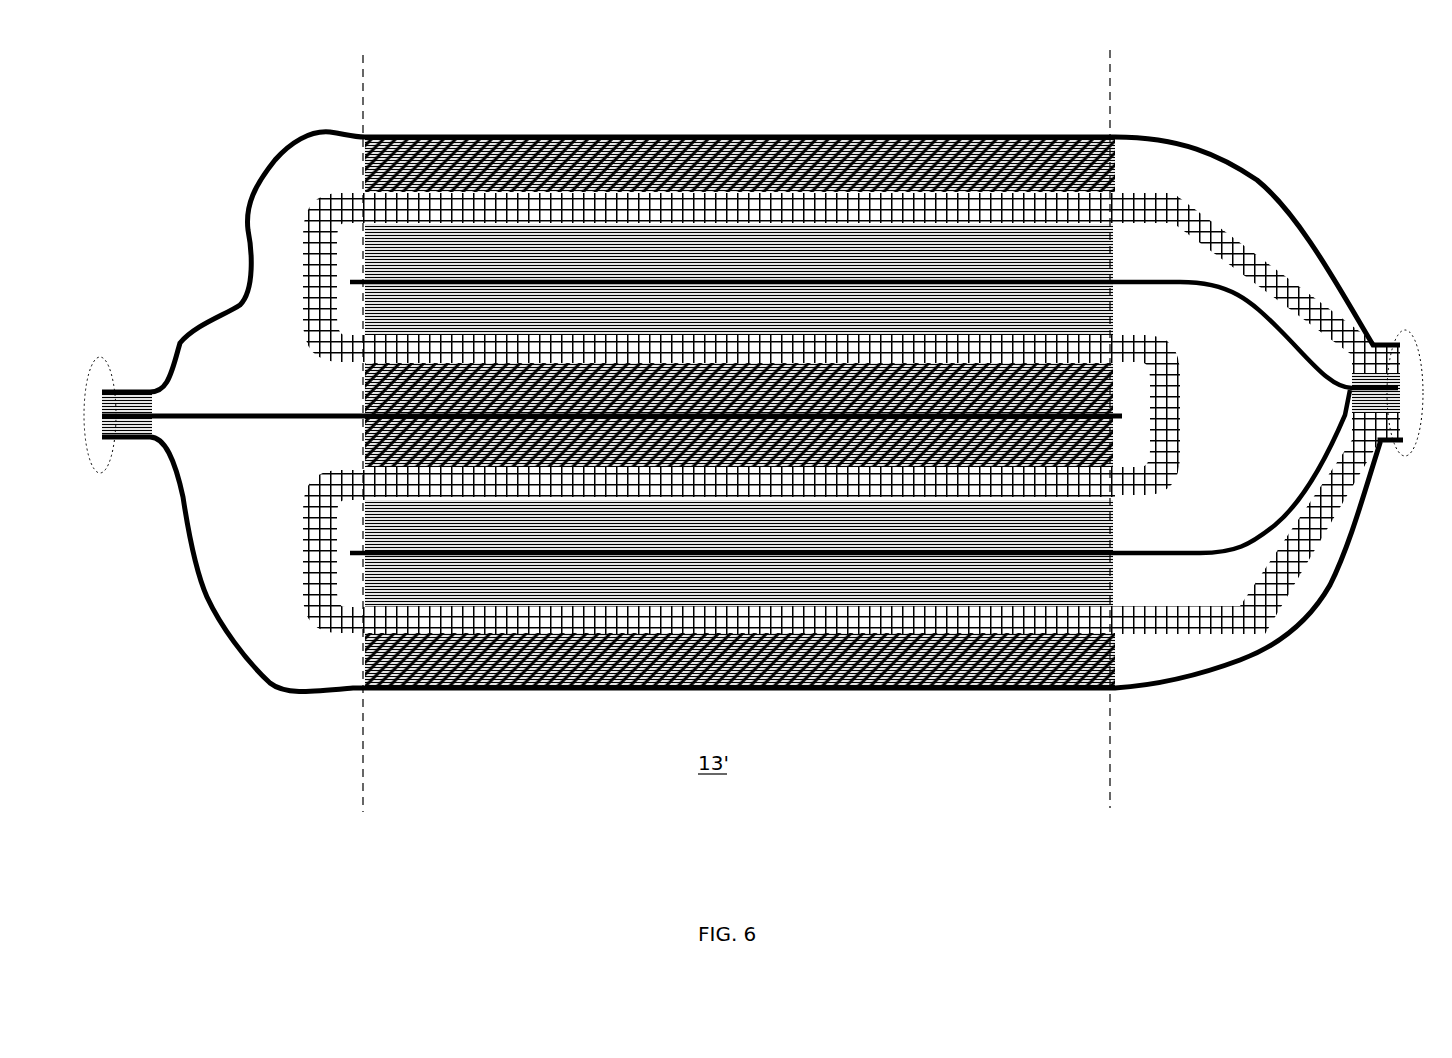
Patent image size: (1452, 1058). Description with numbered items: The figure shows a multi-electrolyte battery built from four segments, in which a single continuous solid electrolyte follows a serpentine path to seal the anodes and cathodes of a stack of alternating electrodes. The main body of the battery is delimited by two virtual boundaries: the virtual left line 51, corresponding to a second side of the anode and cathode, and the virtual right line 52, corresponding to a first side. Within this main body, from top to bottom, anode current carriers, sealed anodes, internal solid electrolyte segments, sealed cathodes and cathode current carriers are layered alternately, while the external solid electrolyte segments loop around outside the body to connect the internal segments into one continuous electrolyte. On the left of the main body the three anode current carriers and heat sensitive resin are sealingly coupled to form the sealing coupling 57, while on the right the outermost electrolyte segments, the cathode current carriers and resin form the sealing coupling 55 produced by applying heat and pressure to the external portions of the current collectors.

The virtual left line 51 is at (372, 453).
The virtual right line 52 is at (1116, 440).
The sealing coupling 55 is at (1405, 456).
The sealing coupling 57 is at (100, 357).